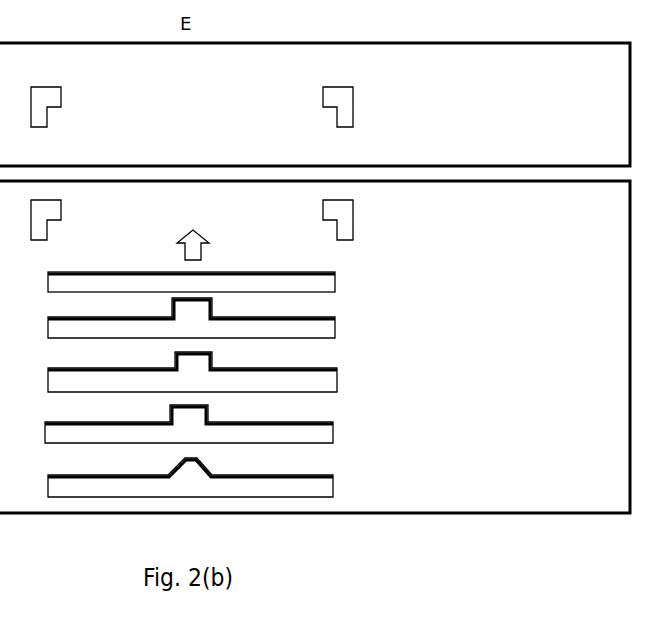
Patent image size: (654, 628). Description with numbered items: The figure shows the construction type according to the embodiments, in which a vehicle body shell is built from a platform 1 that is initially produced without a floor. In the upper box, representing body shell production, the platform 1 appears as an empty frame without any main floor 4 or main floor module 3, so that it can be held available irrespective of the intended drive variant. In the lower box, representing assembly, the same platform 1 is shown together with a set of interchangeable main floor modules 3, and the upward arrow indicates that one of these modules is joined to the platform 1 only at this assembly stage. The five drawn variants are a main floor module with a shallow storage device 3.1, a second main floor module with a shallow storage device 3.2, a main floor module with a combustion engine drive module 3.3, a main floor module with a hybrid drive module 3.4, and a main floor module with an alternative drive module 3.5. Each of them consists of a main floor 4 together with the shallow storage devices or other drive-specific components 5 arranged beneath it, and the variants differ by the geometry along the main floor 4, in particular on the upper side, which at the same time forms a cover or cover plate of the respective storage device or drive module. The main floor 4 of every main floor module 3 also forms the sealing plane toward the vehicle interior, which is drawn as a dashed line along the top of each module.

The platform 1 is at (340, 97).
The main floor module 3 is at (245, 376).
The main floor module with shallow storage device 3.1 is at (244, 284).
The main floor module with shallow storage device 3.2 is at (244, 319).
The main floor module with combustion engine drive module 3.3 is at (247, 374).
The main floor module with hybrid drive module 3.4 is at (245, 427).
The main floor module with alternative drive module 3.5 is at (247, 479).
The main floor 4 is at (333, 272).
The drive-specific components 5 is at (322, 283).